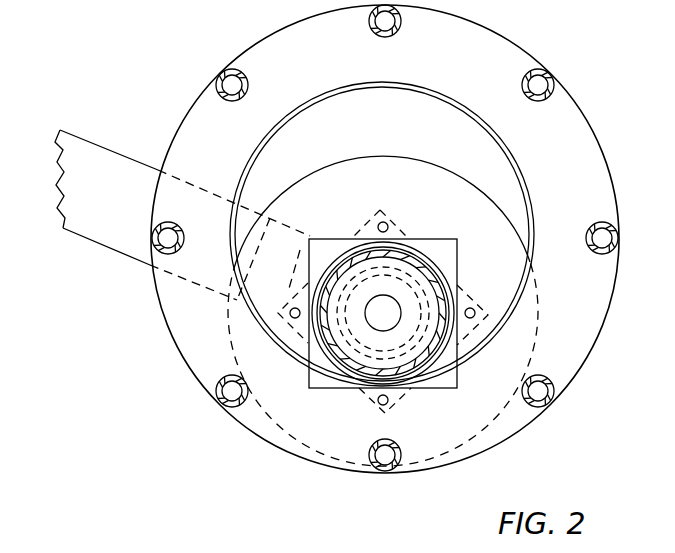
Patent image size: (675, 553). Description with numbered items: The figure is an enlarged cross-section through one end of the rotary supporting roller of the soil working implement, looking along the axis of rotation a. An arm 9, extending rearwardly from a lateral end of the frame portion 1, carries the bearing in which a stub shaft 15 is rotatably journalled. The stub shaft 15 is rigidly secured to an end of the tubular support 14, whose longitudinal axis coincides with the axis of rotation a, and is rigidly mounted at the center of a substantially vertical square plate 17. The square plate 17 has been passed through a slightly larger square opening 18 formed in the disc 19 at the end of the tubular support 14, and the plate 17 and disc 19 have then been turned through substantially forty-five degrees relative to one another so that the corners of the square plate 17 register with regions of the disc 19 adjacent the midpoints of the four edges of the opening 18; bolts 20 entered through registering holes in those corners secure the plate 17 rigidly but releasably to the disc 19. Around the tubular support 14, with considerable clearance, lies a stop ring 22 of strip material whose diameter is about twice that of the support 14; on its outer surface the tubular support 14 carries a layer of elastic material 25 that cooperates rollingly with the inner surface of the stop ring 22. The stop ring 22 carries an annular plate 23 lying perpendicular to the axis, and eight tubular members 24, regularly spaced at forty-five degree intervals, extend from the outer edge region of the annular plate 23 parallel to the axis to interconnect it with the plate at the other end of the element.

The frame portion 1 is at (319, 2).
The arm 9 is at (108, 162).
The tubular support 14 is at (445, 335).
The stub shaft 15 is at (395, 318).
The square plate 17 is at (390, 311).
The square opening 18 is at (445, 247).
The disc 19 is at (425, 143).
The bolt 20 is at (380, 221).
The stop ring 22 is at (458, 80).
The annular plate 23 is at (505, 48).
The tubular member 24 is at (381, 36).
The layer of elastic material 25 is at (410, 238).
The axis of rotation a is at (383, 316).